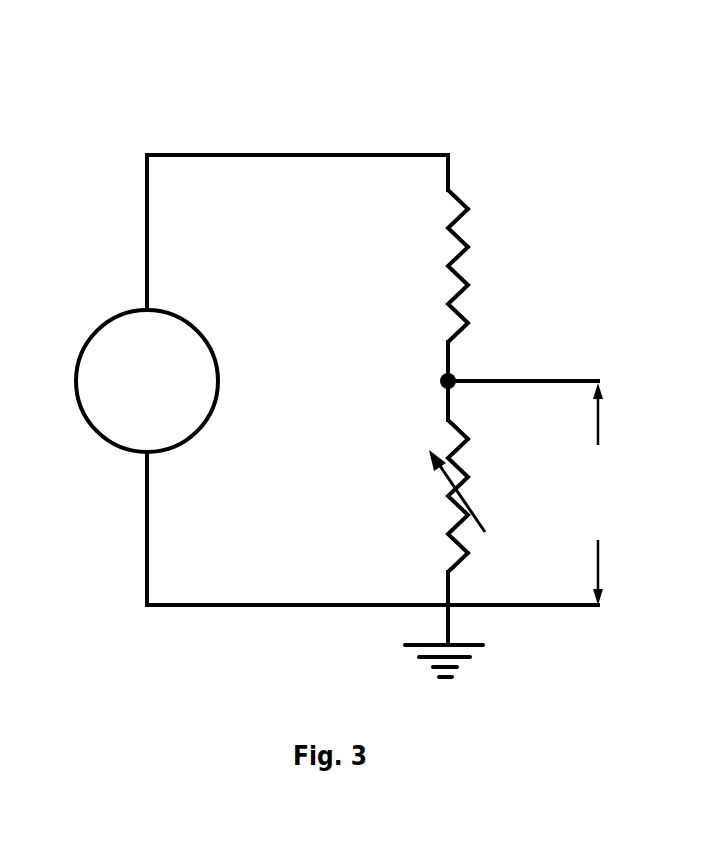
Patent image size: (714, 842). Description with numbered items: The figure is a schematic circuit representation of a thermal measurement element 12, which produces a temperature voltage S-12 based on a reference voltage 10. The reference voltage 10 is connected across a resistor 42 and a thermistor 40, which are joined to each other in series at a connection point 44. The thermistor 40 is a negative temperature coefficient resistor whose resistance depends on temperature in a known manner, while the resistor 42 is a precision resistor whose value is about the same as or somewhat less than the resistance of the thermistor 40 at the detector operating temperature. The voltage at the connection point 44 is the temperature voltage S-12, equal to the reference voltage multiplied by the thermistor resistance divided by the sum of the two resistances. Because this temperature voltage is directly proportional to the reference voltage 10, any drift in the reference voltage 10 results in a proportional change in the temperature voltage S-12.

The thermal measurement element 12 is at (150, 84).
The reference voltage 10 is at (90, 378).
The resistor 42 is at (448, 225).
The connection point 44 is at (440, 378).
The thermistor 40 is at (448, 447).